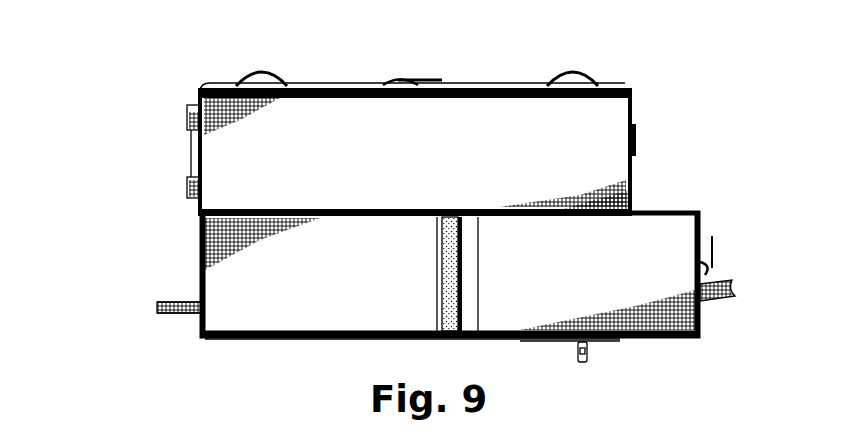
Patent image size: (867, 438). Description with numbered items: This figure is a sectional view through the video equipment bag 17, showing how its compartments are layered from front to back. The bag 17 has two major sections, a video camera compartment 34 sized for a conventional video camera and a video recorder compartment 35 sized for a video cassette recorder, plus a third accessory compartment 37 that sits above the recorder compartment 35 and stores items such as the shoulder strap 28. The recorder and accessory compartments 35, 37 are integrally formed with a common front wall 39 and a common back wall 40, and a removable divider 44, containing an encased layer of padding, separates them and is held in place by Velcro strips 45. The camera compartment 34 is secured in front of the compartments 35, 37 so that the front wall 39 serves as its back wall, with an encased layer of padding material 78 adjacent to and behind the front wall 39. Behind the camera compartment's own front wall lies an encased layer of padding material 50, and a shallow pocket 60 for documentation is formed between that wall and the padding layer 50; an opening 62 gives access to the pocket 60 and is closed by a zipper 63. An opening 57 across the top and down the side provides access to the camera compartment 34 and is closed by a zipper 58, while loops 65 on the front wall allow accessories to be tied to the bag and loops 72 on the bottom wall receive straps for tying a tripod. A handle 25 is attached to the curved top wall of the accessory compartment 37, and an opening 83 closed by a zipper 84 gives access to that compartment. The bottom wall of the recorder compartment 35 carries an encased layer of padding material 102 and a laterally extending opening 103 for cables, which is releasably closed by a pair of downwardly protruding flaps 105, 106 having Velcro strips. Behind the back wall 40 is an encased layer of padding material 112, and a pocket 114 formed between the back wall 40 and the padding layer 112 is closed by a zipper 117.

The video equipment bag 17 is at (132, 108).
The loops 65 is at (262, 72).
The video camera compartment 34 is at (362, 108).
The zipper 63 is at (408, 80).
The opening 62 is at (426, 80).
The shallow pocket 60 is at (492, 88).
The encased layer of padding material 50 is at (520, 98).
The zipper 58 is at (630, 148).
The opening 57 is at (638, 135).
The loops 72 is at (190, 150).
The common front wall 39 is at (658, 216).
The encased layer of padding material 78 is at (568, 220).
The opening 83 is at (713, 250).
The zipper 84 is at (700, 268).
The handle 25 is at (720, 298).
The divider 44 is at (440, 280).
The Velcro strips 45 is at (480, 270).
The encased layer of padding material 102 is at (200, 260).
The protruding flap 106 is at (170, 302).
The opening 103 is at (157, 307).
The protruding flap 105 is at (170, 313).
The video recorder compartment 35 is at (236, 333).
The common back wall 40 is at (288, 338).
The shoulder strap 28 is at (455, 340).
The encased layer of padding material 112 is at (532, 334).
The pocket 114 is at (560, 345).
The zipper 117 is at (585, 345).
The accessory compartment 37 is at (645, 330).